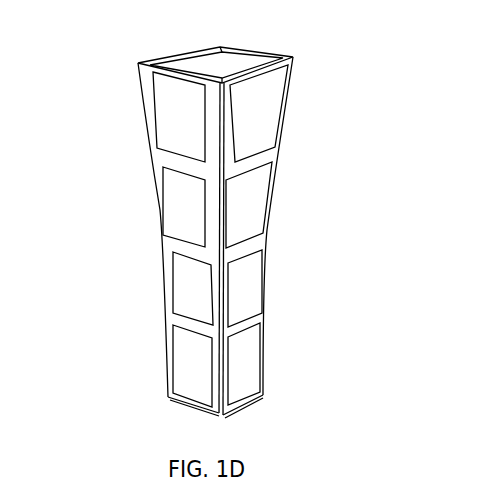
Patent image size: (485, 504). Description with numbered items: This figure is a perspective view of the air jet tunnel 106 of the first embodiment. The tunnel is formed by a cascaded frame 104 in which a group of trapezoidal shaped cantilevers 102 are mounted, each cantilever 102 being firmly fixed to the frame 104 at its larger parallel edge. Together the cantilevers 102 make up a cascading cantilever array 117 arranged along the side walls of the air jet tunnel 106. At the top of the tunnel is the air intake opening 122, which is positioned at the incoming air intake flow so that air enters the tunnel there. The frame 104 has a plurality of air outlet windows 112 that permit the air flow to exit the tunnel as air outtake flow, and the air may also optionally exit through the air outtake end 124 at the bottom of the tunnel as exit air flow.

The cantilever 102 is at (247, 352).
The cascaded frame 104 is at (137, 92).
The air jet tunnel 106 is at (236, 227).
The air outlet windows 112 is at (227, 410).
The cascading cantilever array 117 is at (170, 195).
The air intake opening 122 is at (225, 70).
The air outtake end 124 is at (197, 412).